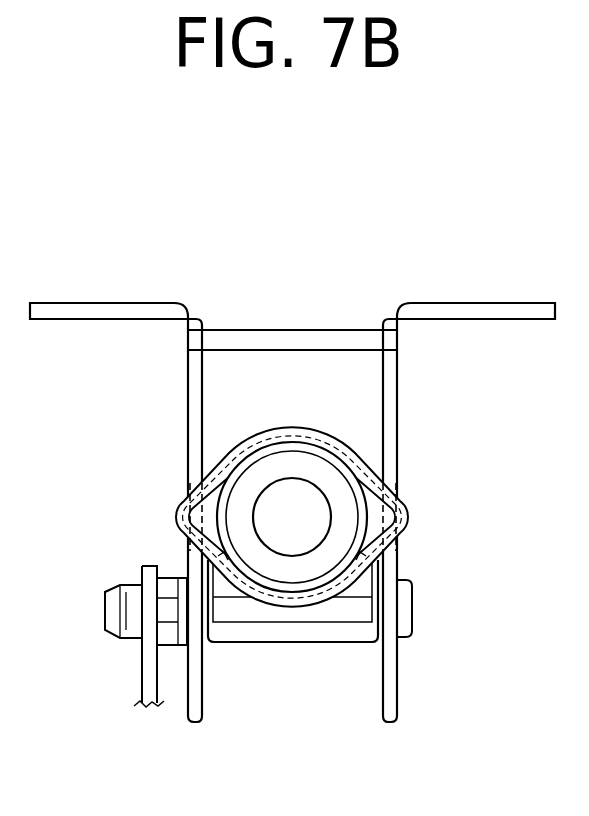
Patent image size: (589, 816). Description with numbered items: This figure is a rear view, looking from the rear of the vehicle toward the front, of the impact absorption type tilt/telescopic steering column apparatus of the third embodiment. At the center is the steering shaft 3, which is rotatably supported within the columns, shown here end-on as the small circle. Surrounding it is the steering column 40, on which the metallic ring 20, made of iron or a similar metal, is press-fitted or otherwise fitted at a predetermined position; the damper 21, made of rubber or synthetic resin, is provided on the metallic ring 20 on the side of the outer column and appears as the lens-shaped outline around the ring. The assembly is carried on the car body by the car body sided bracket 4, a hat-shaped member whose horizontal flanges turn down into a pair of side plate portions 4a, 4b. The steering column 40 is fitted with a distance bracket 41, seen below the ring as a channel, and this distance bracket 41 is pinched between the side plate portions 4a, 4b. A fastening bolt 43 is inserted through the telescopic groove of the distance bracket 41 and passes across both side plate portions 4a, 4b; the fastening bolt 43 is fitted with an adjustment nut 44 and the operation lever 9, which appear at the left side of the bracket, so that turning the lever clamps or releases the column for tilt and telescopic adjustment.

The steering shaft 3 is at (311, 482).
The car body sided bracket 4 is at (292, 461).
The side plate portion 4a is at (188, 415).
The side plate portion 4b is at (397, 378).
The operation lever 9 is at (143, 679).
The metallic ring 20 is at (382, 471).
The damper 21 is at (420, 512).
The steering column 40 is at (284, 440).
The distance bracket 41 is at (320, 645).
The fastening bolt 43 is at (413, 600).
The adjustment nut 44 is at (165, 647).